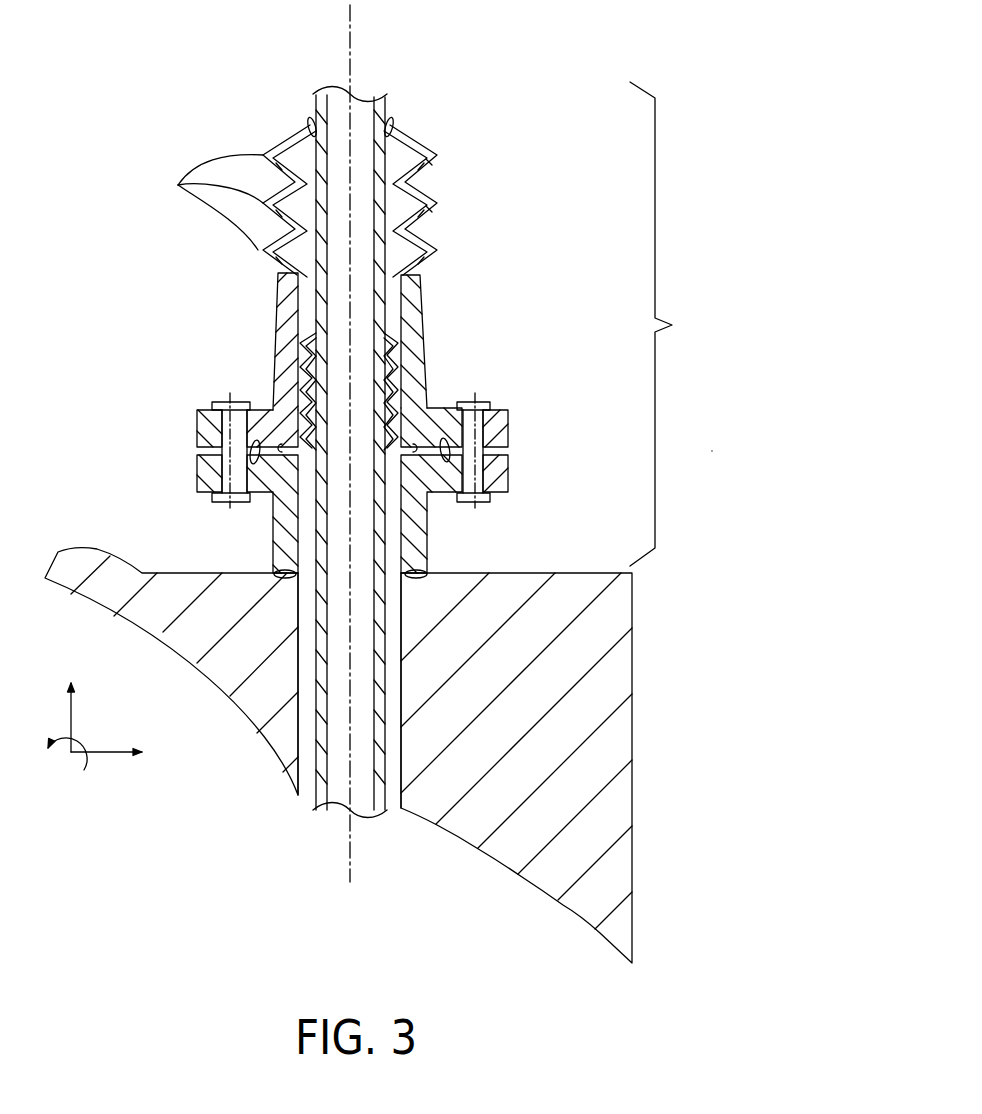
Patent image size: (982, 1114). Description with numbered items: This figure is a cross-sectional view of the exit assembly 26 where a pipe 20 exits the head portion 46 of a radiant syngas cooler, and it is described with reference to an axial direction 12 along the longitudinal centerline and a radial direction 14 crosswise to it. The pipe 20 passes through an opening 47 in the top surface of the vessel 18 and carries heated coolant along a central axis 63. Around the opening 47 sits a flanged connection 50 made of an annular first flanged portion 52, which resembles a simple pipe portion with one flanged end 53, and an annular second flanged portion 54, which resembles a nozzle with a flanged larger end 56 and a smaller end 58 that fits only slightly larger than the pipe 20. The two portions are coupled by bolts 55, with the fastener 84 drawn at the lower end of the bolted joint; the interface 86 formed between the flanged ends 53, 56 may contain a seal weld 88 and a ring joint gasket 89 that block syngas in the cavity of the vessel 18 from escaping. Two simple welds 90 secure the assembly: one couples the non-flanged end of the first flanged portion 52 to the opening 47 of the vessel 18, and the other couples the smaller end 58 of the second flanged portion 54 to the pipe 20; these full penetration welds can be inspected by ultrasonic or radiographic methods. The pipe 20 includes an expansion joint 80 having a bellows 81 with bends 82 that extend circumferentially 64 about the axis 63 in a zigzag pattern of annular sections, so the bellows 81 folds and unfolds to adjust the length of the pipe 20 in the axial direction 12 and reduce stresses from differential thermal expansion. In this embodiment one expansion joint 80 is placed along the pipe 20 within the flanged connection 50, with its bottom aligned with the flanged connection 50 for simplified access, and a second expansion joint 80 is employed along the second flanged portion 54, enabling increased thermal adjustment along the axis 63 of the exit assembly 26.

The axial direction 12 is at (74, 708).
The radial direction 14 is at (118, 756).
The vessel 18 is at (506, 788).
The pipe 20 is at (322, 92).
The exit assembly 26 is at (667, 324).
The head portion 46 is at (751, 440).
The opening 47 is at (327, 690).
The flanged connection 50 is at (312, 453).
The first flanged portion 52 is at (309, 514).
The flanged end 53 is at (510, 486).
The second flanged portion 54 is at (308, 358).
The bolts 55 is at (212, 403).
The flanged end 56 is at (377, 387).
The smaller end 58 is at (263, 174).
The axis 63 is at (352, 32).
The circumferential direction 64 is at (60, 782).
The expansion joint 80 is at (419, 271).
The bellows 81 is at (423, 163).
The bends 82 is at (283, 444).
The bolt 84 is at (477, 500).
The interface 86 is at (215, 450).
The seal weld 88 is at (445, 437).
The ring joint gasket 89 is at (268, 410).
The simple welds 90 is at (308, 122).